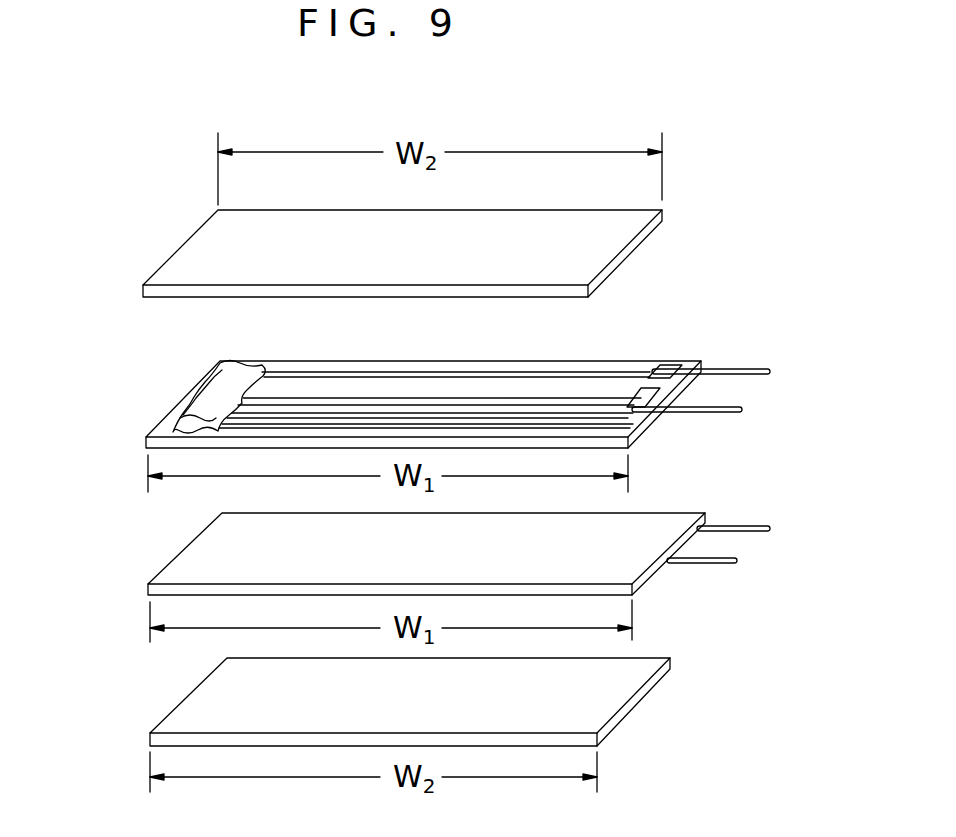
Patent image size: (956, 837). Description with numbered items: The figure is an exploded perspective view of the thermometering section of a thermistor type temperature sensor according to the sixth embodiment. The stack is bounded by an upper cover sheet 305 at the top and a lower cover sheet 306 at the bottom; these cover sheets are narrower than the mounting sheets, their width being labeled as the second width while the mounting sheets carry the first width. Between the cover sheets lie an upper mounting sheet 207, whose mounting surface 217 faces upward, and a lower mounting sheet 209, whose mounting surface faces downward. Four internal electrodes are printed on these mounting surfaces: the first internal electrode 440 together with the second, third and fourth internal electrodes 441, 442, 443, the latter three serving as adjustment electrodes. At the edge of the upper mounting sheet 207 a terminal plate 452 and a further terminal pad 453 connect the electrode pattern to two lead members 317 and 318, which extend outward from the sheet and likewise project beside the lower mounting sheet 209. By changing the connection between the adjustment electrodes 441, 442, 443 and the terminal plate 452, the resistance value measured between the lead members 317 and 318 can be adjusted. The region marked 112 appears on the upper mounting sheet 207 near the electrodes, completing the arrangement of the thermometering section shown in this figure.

The upper cover sheet 305 is at (190, 238).
The upper mounting sheet 207 is at (156, 428).
The sample region 112 is at (213, 393).
The mounting surface 217 is at (295, 388).
The second internal electrode 441 is at (575, 398).
The third internal electrode 442 is at (498, 412).
The fourth internal electrode 443 is at (392, 427).
The internal electrode 440 is at (632, 372).
The contact pad 453 is at (673, 364).
The terminal plate 452 is at (636, 412).
The lead member 317 is at (747, 376).
The lead member 318 is at (713, 420).
The lower mounting sheet 209 is at (183, 551).
The lower cover sheet 306 is at (183, 700).